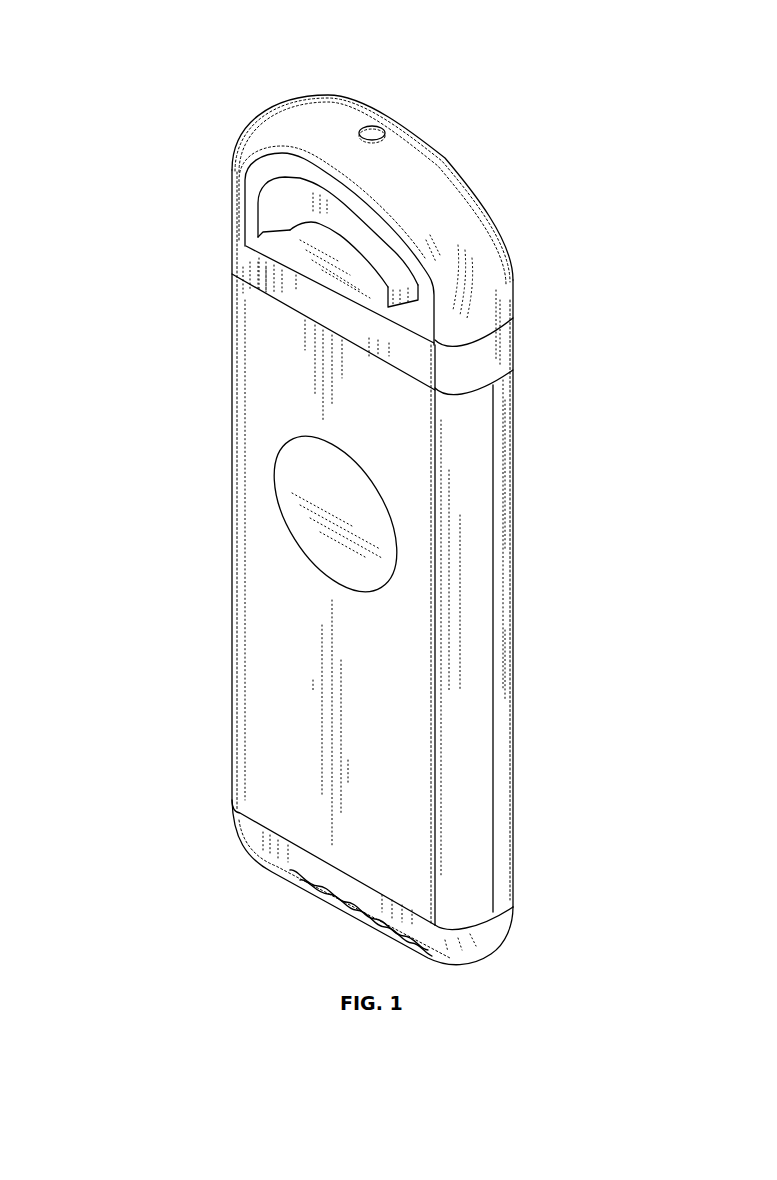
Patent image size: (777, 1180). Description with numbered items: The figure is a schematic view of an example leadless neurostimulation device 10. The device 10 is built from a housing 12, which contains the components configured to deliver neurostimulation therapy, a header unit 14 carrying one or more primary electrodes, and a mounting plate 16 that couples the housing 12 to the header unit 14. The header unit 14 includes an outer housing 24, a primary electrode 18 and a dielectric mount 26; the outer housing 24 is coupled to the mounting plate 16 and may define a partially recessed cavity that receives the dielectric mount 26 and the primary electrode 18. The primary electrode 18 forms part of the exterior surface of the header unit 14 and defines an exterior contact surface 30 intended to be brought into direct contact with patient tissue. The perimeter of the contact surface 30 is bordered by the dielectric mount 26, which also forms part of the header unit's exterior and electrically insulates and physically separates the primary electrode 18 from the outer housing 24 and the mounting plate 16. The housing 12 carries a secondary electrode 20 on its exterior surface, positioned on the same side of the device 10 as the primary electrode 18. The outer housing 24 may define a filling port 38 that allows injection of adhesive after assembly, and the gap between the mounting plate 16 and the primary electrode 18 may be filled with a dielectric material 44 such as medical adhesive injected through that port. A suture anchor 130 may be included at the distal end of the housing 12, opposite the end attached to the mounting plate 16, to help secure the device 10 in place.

The leadless neurostimulation device 10 is at (85, 70).
The housing 12 is at (270, 735).
The header unit 14 is at (480, 192).
The mounting plate 16 is at (263, 273).
The primary electrode 18 is at (270, 212).
The secondary electrode 20 is at (290, 527).
The outer housing 24 is at (483, 317).
The dielectric mount 26 is at (353, 205).
The exterior contact surface 30 is at (268, 195).
The filling port 38 is at (373, 126).
The dielectric material 44 is at (359, 286).
The suture anchor 130 is at (327, 910).